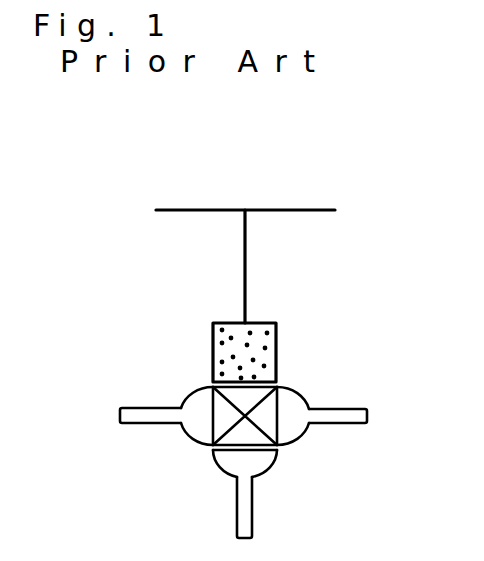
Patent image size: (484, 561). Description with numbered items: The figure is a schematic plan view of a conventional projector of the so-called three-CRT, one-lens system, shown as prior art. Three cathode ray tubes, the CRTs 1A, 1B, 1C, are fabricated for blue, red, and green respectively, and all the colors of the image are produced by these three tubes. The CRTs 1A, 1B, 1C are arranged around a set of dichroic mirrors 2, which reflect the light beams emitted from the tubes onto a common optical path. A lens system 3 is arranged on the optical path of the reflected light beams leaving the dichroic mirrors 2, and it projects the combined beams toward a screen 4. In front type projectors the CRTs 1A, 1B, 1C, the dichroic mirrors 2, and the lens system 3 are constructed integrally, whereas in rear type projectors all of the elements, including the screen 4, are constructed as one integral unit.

The screen 4 is at (302, 209).
The lens system 3 is at (268, 338).
The dichroic mirrors 2 is at (213, 392).
The CRT 1A is at (150, 425).
The CRT 1B is at (358, 409).
The CRT 1C is at (253, 517).